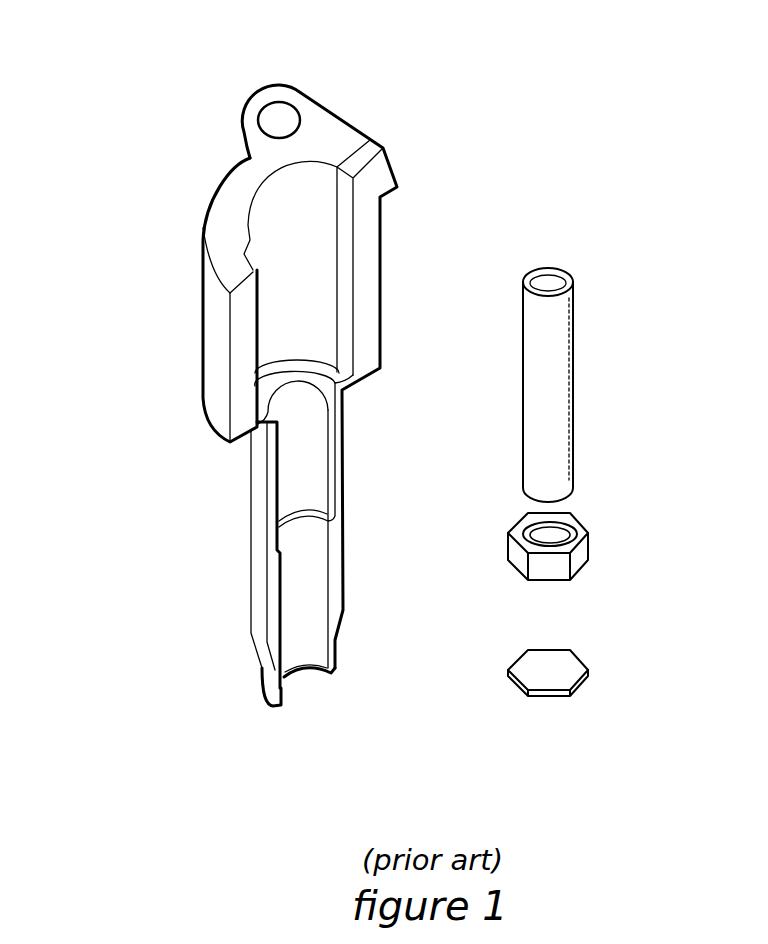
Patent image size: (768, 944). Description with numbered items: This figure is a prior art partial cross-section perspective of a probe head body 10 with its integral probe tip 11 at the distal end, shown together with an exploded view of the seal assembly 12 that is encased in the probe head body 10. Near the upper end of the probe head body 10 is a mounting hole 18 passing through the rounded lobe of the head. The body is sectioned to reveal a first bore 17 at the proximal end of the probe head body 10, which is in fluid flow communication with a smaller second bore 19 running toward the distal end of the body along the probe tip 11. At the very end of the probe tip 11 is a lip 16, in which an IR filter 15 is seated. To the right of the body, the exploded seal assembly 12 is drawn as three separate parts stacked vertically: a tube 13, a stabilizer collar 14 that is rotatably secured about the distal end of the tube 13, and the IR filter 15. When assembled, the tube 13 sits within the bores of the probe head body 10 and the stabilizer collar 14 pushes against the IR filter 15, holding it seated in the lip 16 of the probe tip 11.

The probe head body 10 is at (287, 446).
The probe tip 11 is at (237, 601).
The seal assembly 12 is at (567, 482).
The tube 13 is at (564, 402).
The stabilizer collar 14 is at (538, 524).
The IR filter 15 is at (585, 671).
The lip 16 is at (310, 674).
The first bore 17 is at (310, 277).
The mounting hole 18 is at (287, 113).
The second bore 19 is at (298, 472).